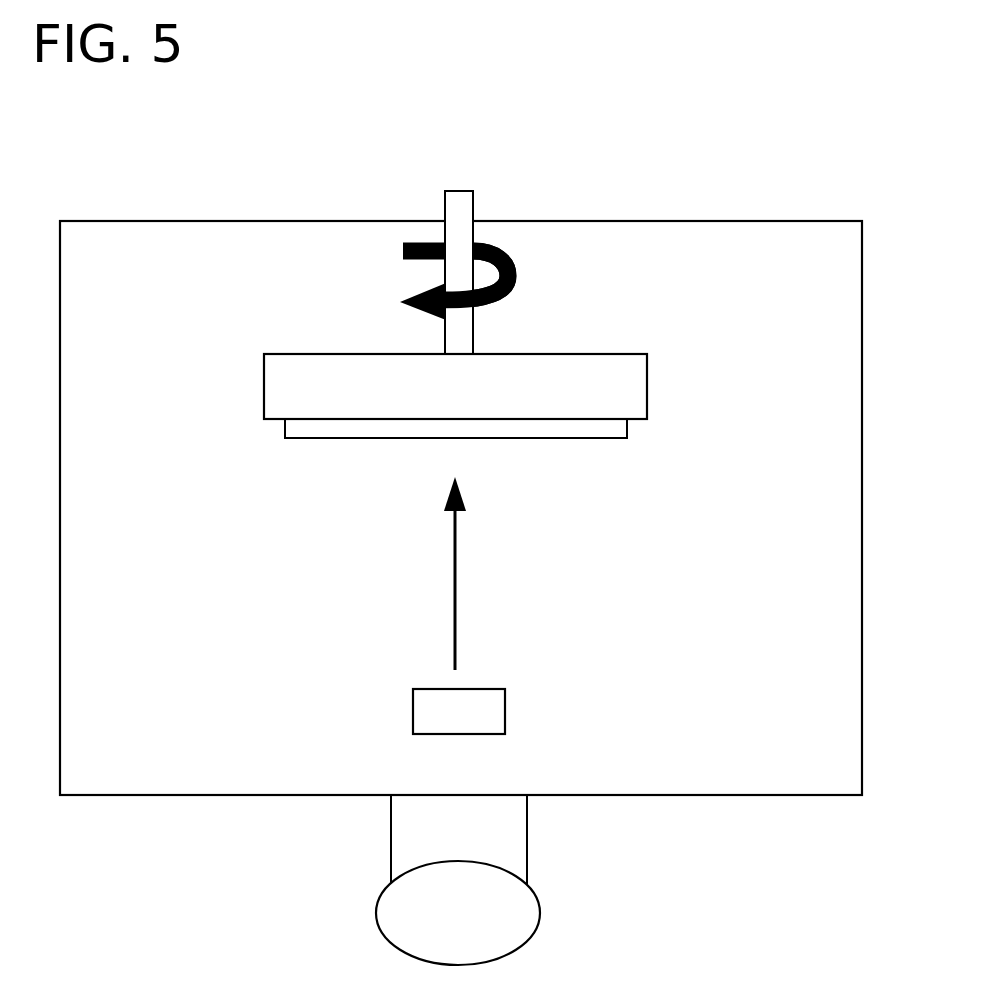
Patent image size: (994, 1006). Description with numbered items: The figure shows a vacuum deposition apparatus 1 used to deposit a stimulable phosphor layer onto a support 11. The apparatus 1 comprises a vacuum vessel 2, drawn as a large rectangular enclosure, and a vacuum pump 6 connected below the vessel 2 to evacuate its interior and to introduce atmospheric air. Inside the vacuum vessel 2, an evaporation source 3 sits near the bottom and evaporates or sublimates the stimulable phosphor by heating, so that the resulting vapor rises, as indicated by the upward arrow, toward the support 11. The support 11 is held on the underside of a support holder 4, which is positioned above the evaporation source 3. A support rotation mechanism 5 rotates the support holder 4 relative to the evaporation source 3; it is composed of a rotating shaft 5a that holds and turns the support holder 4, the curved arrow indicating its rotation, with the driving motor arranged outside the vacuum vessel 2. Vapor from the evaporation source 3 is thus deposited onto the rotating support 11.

The vacuum deposition apparatus 1 is at (540, 178).
The vacuum vessel 2 is at (862, 406).
The evaporation source 3 is at (507, 712).
The support holder 4 is at (648, 377).
The support rotation mechanism 5 is at (487, 335).
The rotating shaft 5a is at (455, 272).
The vacuum pump 6 is at (540, 913).
The support 11 is at (576, 428).